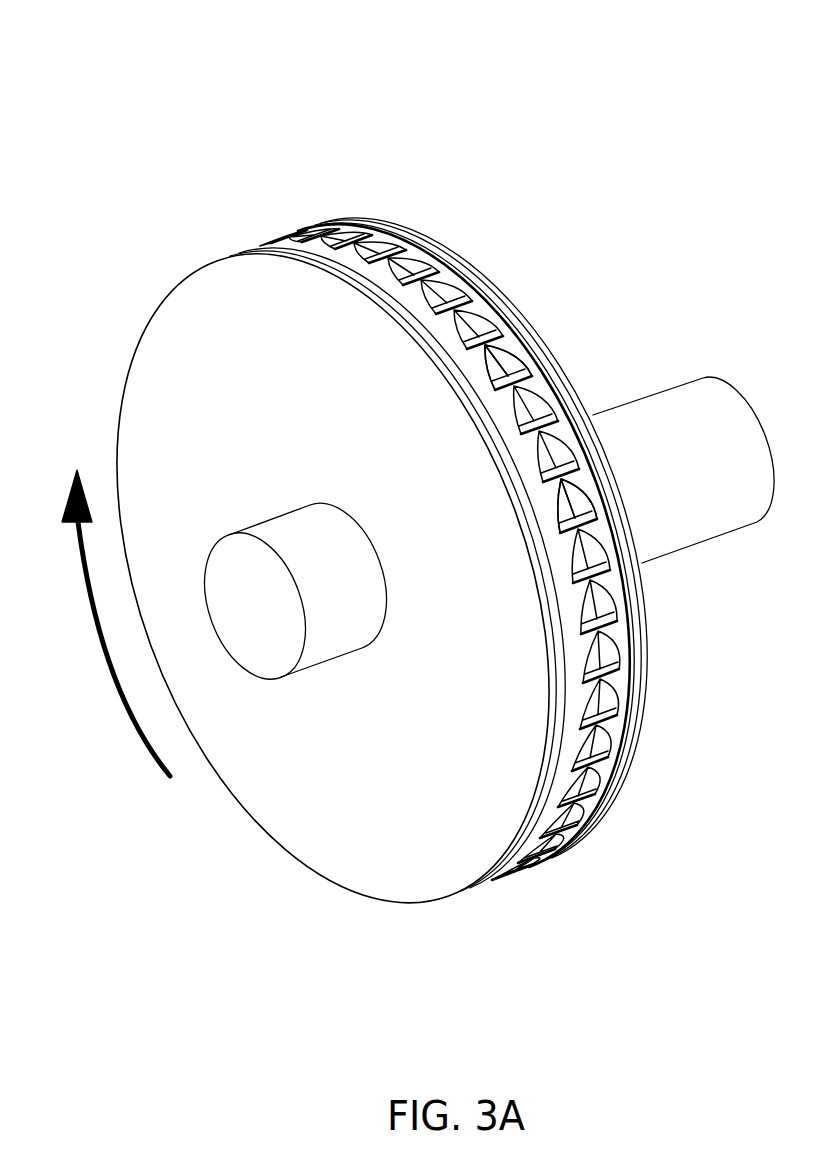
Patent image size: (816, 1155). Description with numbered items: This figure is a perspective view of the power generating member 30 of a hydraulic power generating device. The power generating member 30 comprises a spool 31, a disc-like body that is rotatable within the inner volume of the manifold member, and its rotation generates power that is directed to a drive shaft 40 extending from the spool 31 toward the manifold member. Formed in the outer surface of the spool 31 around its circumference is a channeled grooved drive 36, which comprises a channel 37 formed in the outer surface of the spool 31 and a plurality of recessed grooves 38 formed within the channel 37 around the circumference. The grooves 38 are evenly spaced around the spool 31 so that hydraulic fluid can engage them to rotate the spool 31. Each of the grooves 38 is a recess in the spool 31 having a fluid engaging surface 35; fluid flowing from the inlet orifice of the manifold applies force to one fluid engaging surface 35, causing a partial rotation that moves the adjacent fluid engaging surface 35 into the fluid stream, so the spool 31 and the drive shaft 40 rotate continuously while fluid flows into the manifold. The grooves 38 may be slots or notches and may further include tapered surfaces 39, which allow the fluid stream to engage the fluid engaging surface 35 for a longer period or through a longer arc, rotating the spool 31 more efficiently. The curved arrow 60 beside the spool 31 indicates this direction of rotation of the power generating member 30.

The power generating member 30 is at (515, 110).
The spool 31 is at (642, 680).
The fluid engaging surface 35 is at (569, 512).
The channeled grooved drive 36 is at (528, 905).
The channel 37 is at (310, 205).
The recessed grooves 38 is at (492, 347).
The tapered surfaces 39 is at (567, 500).
The drive shaft 40 is at (719, 402).
The direction of rotation 60 is at (108, 680).